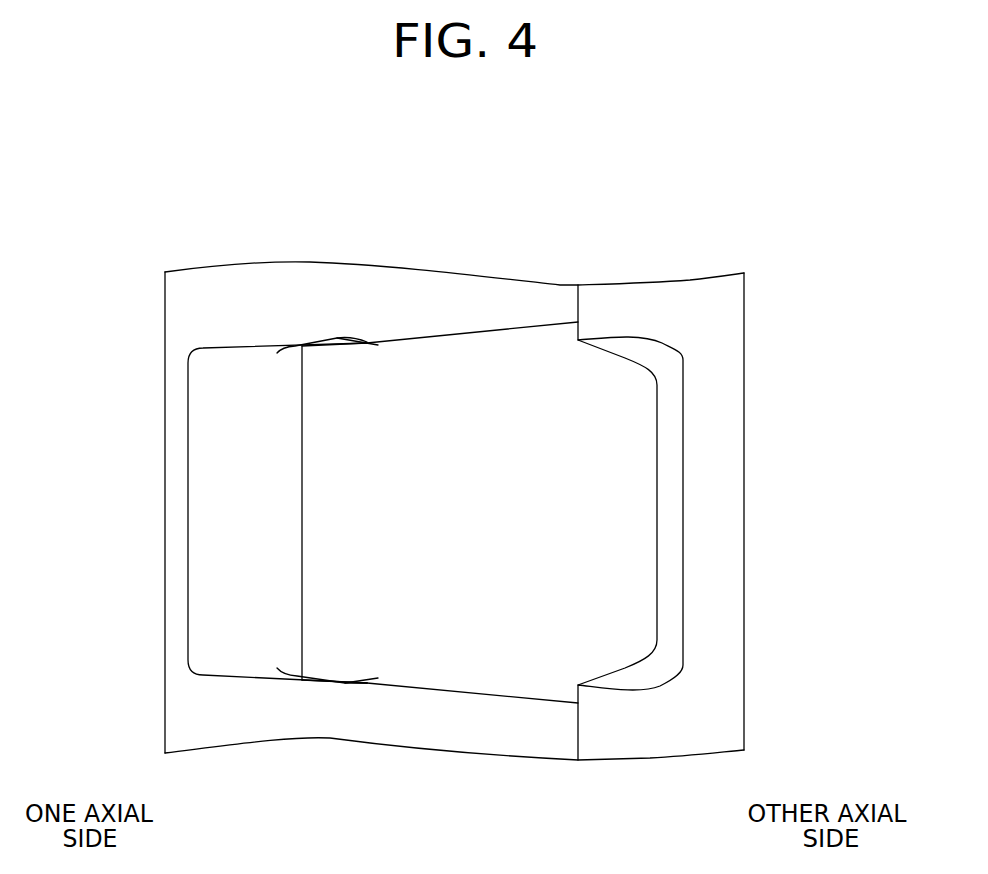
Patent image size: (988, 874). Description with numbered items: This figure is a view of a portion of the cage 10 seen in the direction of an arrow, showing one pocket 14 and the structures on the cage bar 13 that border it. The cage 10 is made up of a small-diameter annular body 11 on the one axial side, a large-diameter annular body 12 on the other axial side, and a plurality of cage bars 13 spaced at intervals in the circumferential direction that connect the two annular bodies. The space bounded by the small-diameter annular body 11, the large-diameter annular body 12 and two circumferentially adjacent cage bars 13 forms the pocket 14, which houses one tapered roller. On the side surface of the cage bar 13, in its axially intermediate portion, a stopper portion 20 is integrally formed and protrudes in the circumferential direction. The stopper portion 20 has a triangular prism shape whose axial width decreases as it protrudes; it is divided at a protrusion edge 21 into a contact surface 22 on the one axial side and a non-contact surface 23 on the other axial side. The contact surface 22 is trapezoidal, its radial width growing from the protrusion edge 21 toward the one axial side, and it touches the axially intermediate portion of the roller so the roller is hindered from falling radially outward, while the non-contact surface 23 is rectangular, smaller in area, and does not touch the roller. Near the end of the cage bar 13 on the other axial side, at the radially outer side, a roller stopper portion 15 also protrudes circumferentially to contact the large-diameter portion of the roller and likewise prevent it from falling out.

The cage 10 is at (165, 315).
The small-diameter annular body 11 is at (215, 512).
The large-diameter annular body 12 is at (722, 510).
The cage bar 13 is at (333, 277).
The pocket 14 is at (500, 527).
The roller stopper portion 15 is at (628, 348).
The stopper portion 20 is at (377, 345).
The protrusion edge 21 is at (367, 345).
The contact surface 22 is at (358, 350).
The non-contact surface 23 is at (378, 345).